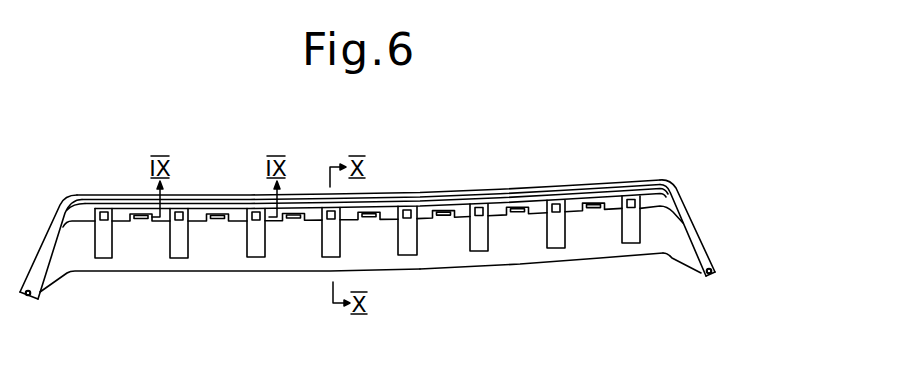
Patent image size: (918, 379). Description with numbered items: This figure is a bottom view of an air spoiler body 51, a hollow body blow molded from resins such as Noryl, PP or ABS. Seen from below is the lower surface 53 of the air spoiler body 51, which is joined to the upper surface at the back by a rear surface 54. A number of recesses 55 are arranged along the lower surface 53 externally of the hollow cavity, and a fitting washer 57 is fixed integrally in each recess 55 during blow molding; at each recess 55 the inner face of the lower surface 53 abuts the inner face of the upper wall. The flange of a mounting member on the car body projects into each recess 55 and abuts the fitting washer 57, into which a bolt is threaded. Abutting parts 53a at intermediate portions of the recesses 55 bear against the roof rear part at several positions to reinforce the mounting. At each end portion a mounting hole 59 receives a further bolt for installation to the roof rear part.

The air spoiler body 51 is at (216, 281).
The lower surface 53 is at (448, 247).
The abutting parts 53a is at (138, 195).
The rear surface 54 is at (523, 264).
The recesses 55 is at (103, 258).
The fitting washer 57 is at (103, 212).
The mounting hole 59 is at (26, 297).